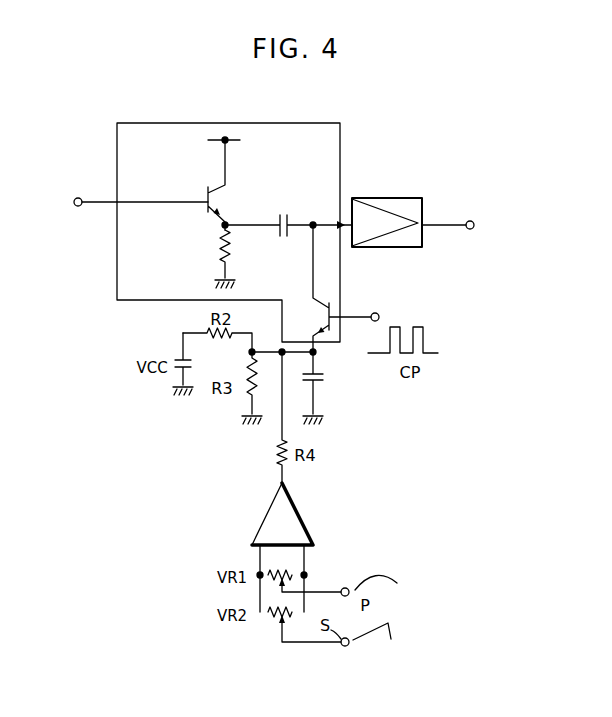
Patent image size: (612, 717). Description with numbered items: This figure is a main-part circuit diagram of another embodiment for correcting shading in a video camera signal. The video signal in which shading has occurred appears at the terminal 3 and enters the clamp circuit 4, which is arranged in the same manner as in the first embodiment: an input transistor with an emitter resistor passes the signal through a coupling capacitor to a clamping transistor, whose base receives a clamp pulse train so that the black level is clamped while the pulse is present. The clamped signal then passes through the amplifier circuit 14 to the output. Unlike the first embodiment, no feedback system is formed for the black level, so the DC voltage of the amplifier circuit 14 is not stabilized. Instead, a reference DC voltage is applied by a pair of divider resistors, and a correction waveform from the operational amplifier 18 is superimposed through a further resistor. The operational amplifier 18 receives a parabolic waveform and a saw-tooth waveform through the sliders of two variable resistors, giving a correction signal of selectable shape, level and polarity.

The terminal 3 is at (78, 207).
The clamp circuit 4 is at (330, 144).
The amplifier circuit 14 is at (384, 198).
The operational amplifier 18 is at (297, 510).